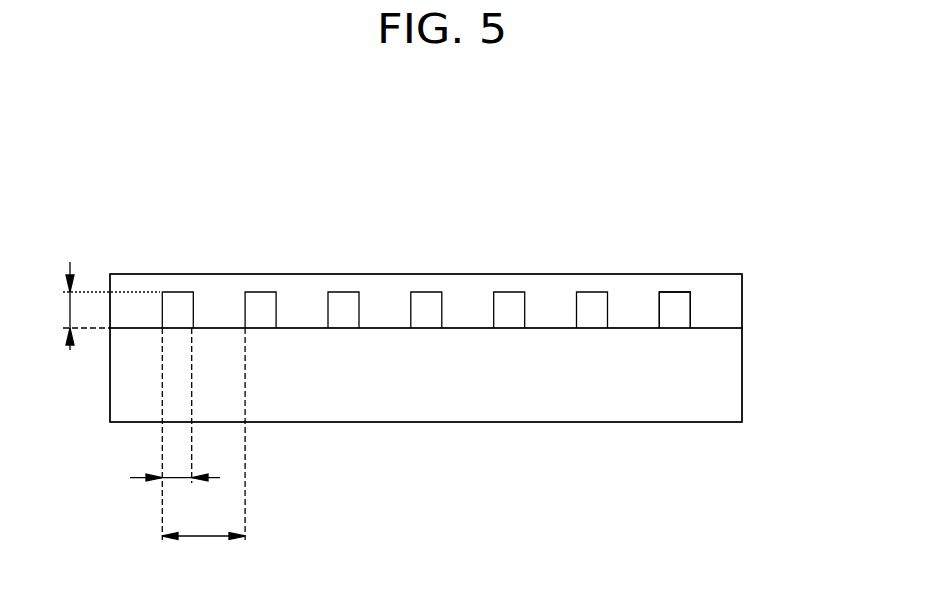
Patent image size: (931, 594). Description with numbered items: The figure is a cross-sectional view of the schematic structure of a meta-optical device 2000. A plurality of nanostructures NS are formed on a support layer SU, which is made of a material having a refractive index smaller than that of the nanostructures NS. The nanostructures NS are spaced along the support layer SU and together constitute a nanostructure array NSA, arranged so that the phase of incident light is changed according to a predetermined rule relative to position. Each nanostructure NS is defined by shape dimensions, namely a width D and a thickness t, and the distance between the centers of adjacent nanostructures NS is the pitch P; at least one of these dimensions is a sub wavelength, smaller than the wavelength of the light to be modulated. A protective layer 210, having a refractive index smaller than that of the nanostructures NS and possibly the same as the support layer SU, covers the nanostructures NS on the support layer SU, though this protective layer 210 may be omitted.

The meta-optical device 2000 is at (683, 205).
The support layer SU is at (742, 375).
The protective layer 210 is at (728, 308).
The nanostructures NS is at (258, 297).
The nanostructure array NSA is at (697, 298).
The thickness t is at (102, 306).
The width D is at (175, 434).
The pitch P is at (203, 447).